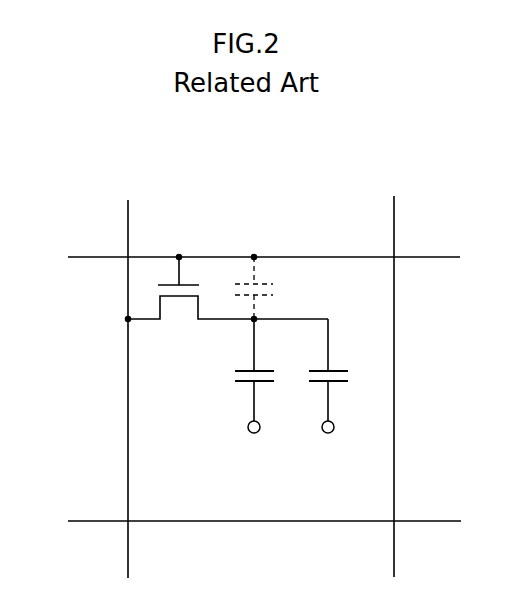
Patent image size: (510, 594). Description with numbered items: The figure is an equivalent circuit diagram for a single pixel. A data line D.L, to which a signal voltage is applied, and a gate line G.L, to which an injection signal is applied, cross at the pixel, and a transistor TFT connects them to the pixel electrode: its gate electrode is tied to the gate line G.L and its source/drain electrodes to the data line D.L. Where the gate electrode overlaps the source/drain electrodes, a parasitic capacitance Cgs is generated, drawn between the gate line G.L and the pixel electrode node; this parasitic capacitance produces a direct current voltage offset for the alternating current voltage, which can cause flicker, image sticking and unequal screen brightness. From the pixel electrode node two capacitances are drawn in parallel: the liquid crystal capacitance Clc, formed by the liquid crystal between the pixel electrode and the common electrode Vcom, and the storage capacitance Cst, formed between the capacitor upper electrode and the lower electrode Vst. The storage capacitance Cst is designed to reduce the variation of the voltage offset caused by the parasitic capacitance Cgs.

The data line D.L is at (124, 377).
The gate line G.L is at (244, 257).
The thin film transistor (gate G, source S, drain D) TFT is at (190, 299).
The parasitic capacitance Cgs is at (271, 286).
The storage capacitance Cst is at (239, 376).
The liquid crystal capacitance Clc is at (315, 376).
The lower electrode Vst is at (243, 448).
The common electrode Vcom is at (329, 448).